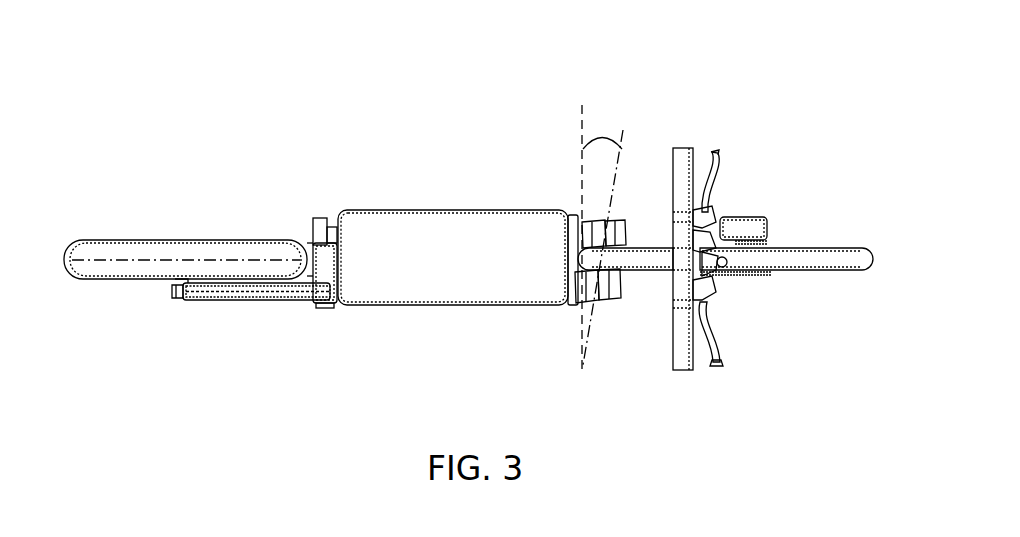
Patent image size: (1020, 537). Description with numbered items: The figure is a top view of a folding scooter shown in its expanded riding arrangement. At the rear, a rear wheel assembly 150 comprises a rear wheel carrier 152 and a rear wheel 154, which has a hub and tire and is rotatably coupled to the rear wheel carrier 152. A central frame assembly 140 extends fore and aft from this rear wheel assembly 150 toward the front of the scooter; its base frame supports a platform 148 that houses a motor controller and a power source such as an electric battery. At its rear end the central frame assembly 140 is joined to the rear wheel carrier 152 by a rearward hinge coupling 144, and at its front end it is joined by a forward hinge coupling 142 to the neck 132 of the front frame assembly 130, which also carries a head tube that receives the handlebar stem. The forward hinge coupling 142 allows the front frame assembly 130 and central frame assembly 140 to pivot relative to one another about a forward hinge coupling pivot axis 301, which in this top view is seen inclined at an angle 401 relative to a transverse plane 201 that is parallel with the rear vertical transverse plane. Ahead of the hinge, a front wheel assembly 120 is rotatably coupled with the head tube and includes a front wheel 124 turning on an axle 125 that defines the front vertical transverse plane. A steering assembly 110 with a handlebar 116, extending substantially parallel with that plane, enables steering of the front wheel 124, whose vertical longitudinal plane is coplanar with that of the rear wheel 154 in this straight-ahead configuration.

The steering assembly 110 is at (744, 222).
The handlebar 116 is at (693, 368).
The front wheel assembly 120 is at (801, 229).
The front wheel 124 is at (797, 270).
The axle 125 is at (772, 242).
The front frame assembly 130 is at (669, 228).
The neck 132 is at (650, 272).
The central frame assembly 140 is at (466, 209).
The forward hinge coupling 142 is at (592, 214).
The rearward hinge coupling 144 is at (315, 218).
The platform 148 is at (437, 305).
The rear wheel assembly 150 is at (197, 237).
The rear wheel carrier 152 is at (255, 300).
The rear wheel 154 is at (147, 240).
The transverse plane 201 is at (582, 105).
The forward hinge coupling pivot axis 301 is at (628, 133).
The angle 401 is at (603, 138).